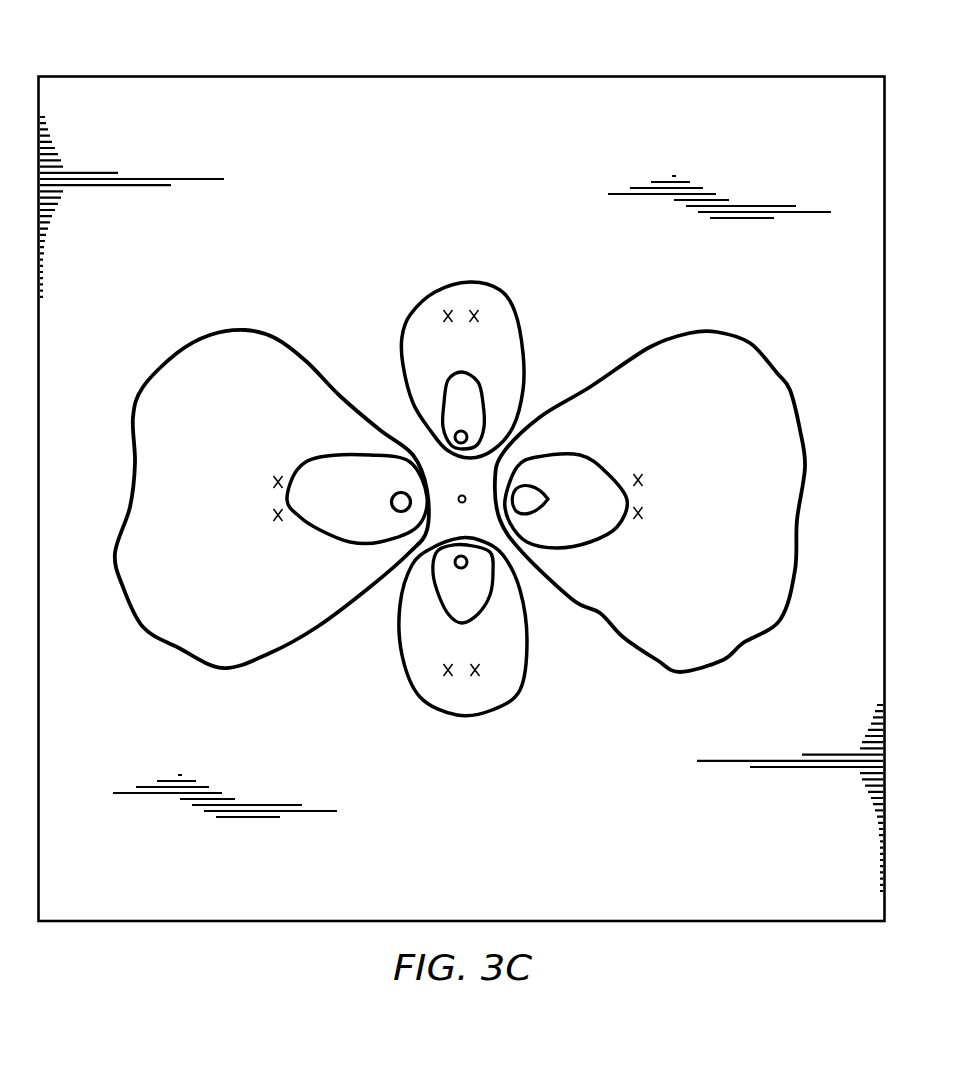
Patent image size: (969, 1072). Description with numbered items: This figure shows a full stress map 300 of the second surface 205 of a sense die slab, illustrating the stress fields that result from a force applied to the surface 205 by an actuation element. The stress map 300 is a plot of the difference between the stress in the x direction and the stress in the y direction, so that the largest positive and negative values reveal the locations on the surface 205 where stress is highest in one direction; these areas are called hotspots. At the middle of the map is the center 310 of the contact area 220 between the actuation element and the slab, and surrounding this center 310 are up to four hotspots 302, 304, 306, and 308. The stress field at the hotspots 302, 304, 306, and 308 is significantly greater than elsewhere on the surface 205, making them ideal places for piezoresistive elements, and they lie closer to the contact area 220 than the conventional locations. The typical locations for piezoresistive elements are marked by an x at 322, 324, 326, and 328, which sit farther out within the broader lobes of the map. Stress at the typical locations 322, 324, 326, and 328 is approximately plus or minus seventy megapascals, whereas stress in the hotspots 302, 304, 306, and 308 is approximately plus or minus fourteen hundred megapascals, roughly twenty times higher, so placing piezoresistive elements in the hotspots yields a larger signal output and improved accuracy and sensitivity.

The stress map 300 is at (256, 60).
The second surface 205 is at (670, 106).
The contact area 220 is at (450, 480).
The hotspot 302 is at (467, 433).
The hotspot 304 is at (528, 498).
The hotspot 306 is at (458, 565).
The hotspot 308 is at (396, 492).
The center of the contact area 310 is at (465, 502).
The typical location for piezoresistive element 322 is at (485, 308).
The typical location for piezoresistive element 324 is at (650, 498).
The typical location for piezoresistive element 326 is at (465, 680).
The typical location for piezoresistive element 328 is at (272, 495).